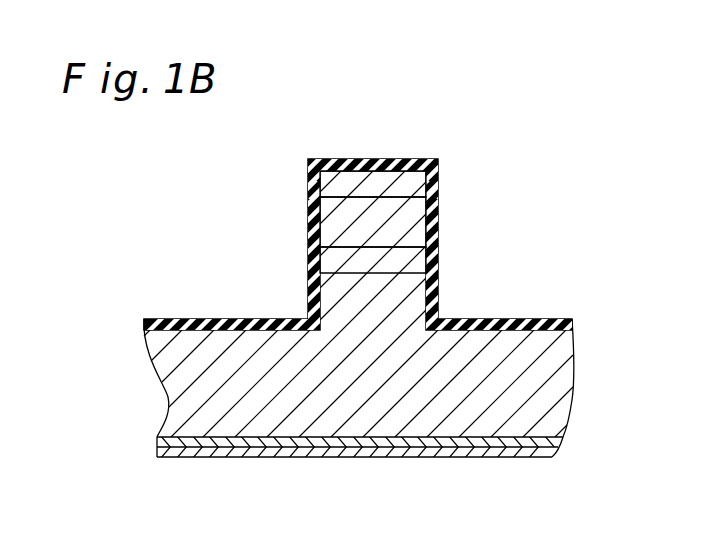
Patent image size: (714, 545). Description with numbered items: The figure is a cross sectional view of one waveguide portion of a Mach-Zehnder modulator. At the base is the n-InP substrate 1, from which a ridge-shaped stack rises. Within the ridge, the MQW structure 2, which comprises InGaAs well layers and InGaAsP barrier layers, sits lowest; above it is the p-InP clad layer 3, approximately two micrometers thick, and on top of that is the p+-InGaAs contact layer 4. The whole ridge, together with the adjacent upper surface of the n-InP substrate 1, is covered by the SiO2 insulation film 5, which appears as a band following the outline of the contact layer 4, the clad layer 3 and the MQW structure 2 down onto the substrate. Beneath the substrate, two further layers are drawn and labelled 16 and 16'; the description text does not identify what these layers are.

The n-InP substrate 1 is at (502, 352).
The MQW structure 2 is at (410, 262).
The p-InP clad layer 3 is at (404, 220).
The p+-InGaAs contact layer 4 is at (410, 182).
The SiO2 insulation film 5 is at (397, 159).
The upper backside layer 16 is at (360, 486).
The lower backside layer 16' is at (354, 491).